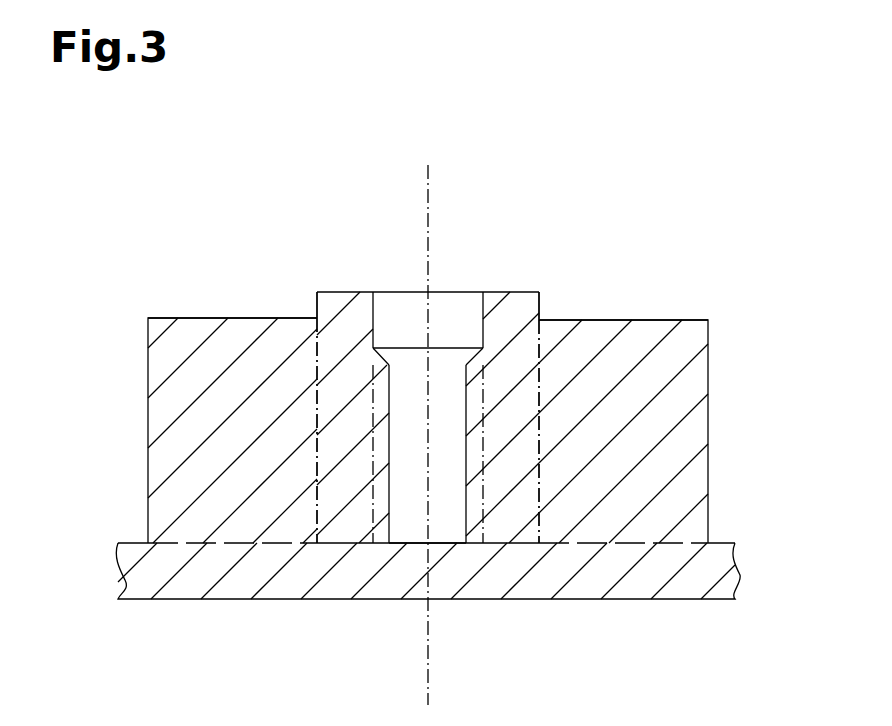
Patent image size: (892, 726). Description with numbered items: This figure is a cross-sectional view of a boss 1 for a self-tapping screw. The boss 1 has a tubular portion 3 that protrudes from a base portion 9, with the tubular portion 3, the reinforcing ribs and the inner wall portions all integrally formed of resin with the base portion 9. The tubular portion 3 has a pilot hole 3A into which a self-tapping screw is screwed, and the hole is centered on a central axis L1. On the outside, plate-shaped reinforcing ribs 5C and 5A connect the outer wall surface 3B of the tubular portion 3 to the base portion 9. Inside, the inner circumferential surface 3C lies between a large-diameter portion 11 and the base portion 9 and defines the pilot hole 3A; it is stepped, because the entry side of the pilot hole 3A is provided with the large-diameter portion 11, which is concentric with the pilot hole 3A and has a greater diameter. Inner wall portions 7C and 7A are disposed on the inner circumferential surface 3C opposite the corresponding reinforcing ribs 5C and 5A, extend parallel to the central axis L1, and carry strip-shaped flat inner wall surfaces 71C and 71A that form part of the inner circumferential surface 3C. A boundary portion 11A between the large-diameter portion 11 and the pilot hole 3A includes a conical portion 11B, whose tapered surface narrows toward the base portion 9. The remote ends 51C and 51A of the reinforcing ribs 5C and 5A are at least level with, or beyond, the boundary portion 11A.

The boss 1 is at (520, 273).
The tubular portion 3 is at (545, 294).
The pilot hole 3A is at (437, 480).
The outer wall surface 3B is at (317, 307).
The inner circumferential surface 3C is at (389, 444).
The reinforcing rib 5A is at (699, 315).
The reinforcing rib 5C is at (196, 311).
The inner wall portion 7A is at (461, 394).
The inner wall portion 7C is at (393, 394).
The base portion 9 is at (730, 543).
The large-diameter portion 11 is at (483, 320).
The boundary portion 11A is at (483, 348).
The conical portion 11B is at (474, 362).
The remote end 51A is at (652, 319).
The remote end 51C is at (253, 317).
The inner wall surface 71A is at (466, 521).
The inner wall surface 71C is at (390, 492).
The central axis L1 is at (430, 179).